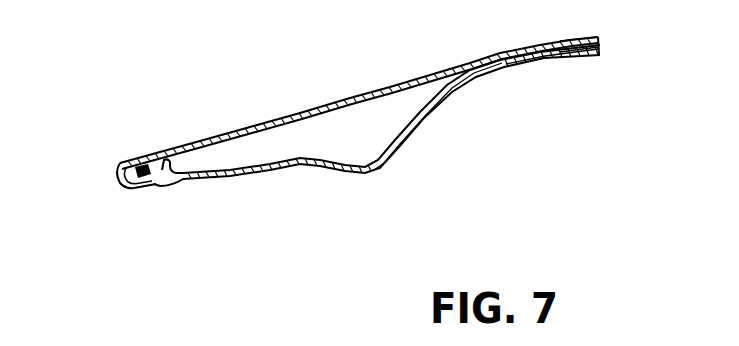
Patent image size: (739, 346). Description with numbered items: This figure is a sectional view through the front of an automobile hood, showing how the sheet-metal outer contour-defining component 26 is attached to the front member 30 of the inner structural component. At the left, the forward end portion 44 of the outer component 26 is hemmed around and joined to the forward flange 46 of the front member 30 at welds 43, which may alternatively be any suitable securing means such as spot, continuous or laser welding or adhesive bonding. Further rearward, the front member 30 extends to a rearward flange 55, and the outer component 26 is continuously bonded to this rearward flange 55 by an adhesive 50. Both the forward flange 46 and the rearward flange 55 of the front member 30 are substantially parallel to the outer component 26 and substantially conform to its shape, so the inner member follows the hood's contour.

The outer contour-defining component 26 is at (328, 103).
The front member 30 is at (372, 167).
The welds 43 is at (145, 183).
The forward end portion 44 is at (118, 184).
The forward flange 46 is at (168, 182).
The adhesive 50 is at (599, 44).
The rearward flange 55 is at (545, 67).